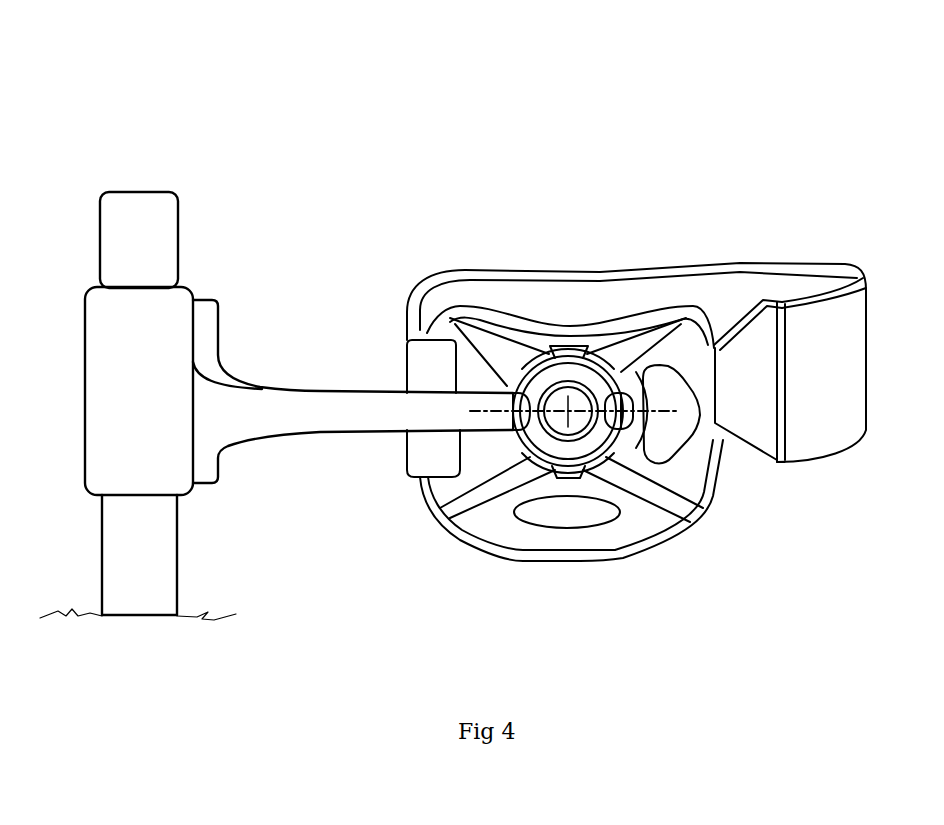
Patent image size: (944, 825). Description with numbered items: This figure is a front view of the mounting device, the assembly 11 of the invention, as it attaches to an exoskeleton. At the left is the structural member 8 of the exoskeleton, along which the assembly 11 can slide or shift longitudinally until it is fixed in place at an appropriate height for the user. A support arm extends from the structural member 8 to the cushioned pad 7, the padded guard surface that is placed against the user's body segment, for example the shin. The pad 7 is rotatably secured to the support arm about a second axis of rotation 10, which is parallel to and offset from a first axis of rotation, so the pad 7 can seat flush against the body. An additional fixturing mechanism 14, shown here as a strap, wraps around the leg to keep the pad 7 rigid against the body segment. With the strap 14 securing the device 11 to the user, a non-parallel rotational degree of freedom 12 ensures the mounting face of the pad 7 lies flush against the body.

The cushioned pad 7 is at (492, 525).
The structural member 8 is at (140, 237).
The second axis of rotation 10 is at (523, 411).
The assembly 11 is at (623, 340).
The non-parallel rotational degree of freedom 12 is at (572, 413).
The fixturing mechanism 14 is at (763, 260).